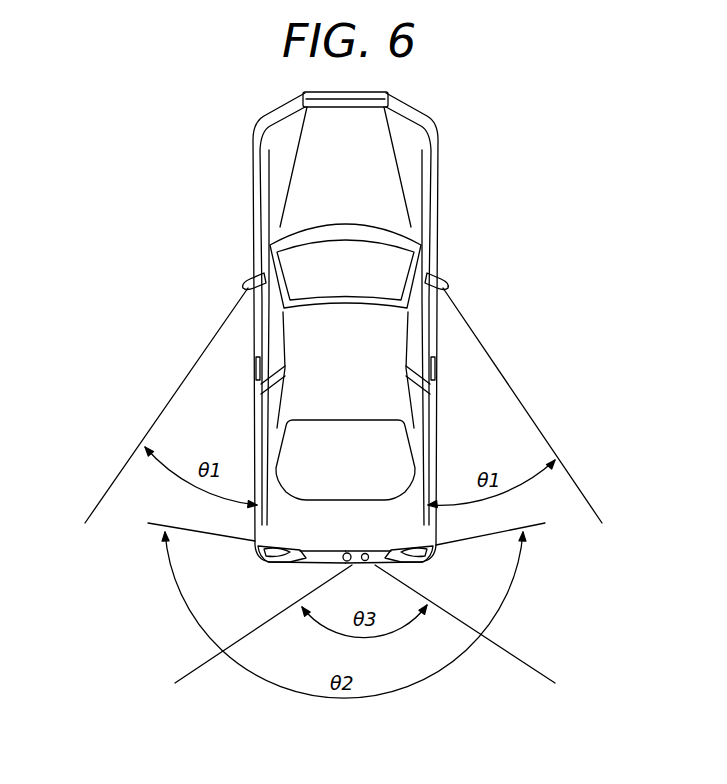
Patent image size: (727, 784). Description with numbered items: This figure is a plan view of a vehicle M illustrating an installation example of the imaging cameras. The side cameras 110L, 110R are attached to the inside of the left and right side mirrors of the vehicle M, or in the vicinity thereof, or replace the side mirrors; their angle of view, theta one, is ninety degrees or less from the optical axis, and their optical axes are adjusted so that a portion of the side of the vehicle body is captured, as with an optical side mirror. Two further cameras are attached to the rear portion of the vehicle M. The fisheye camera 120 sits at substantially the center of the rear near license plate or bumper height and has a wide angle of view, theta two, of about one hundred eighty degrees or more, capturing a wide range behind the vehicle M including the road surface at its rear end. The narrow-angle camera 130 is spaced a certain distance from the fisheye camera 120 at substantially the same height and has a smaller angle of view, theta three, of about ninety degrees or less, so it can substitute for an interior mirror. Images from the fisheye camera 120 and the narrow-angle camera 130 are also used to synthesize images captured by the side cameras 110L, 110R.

The vehicle M is at (438, 165).
The left side camera 110L is at (243, 283).
The right side camera 110R is at (453, 285).
The fisheye camera 120 is at (347, 553).
The narrow-angle camera 130 is at (366, 553).